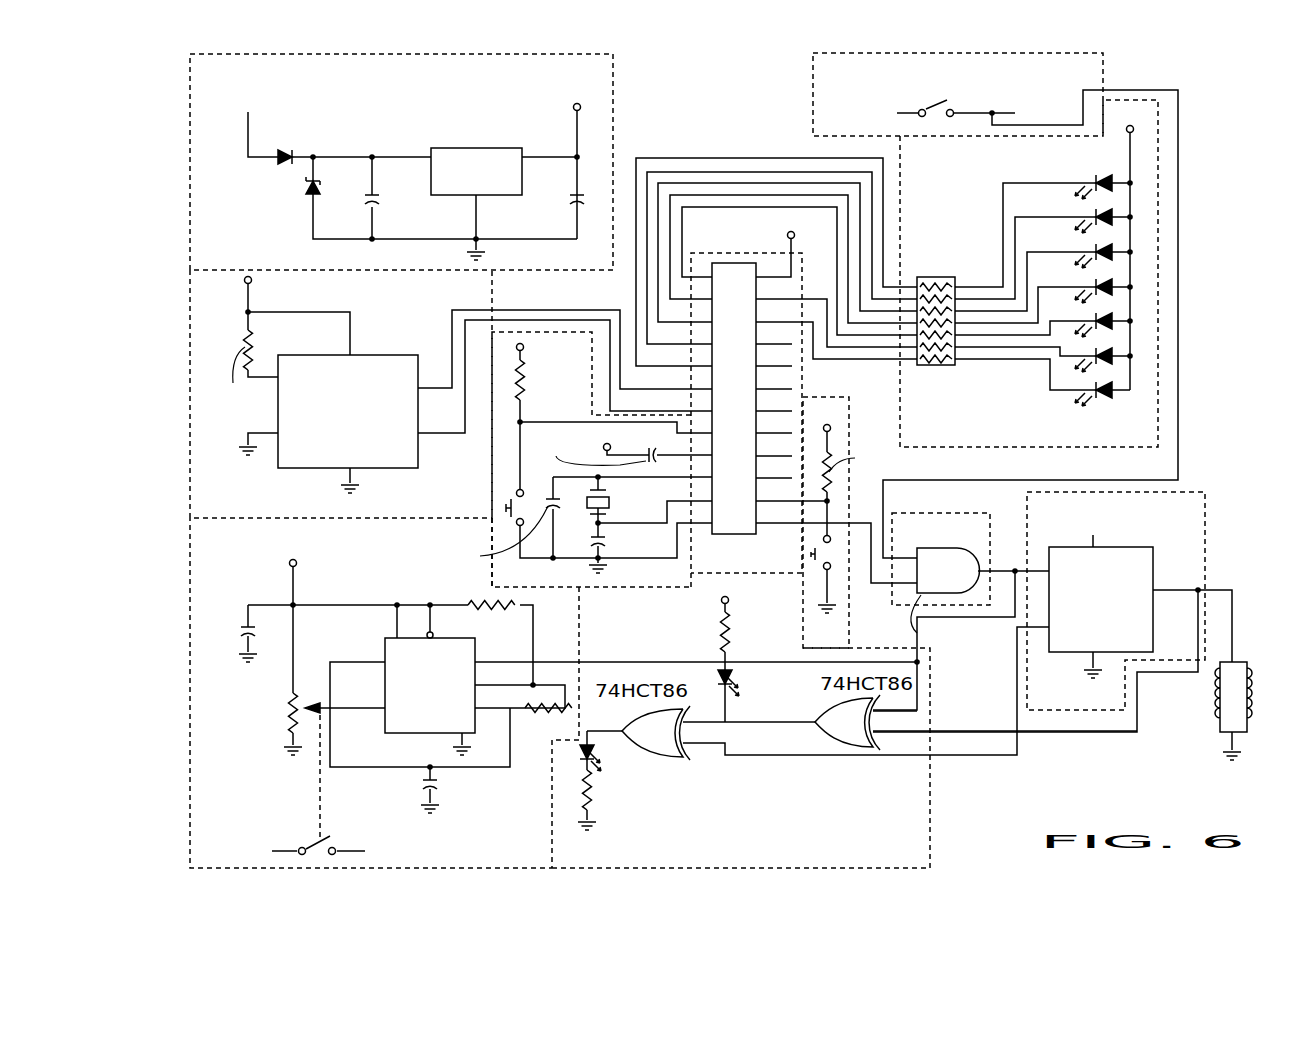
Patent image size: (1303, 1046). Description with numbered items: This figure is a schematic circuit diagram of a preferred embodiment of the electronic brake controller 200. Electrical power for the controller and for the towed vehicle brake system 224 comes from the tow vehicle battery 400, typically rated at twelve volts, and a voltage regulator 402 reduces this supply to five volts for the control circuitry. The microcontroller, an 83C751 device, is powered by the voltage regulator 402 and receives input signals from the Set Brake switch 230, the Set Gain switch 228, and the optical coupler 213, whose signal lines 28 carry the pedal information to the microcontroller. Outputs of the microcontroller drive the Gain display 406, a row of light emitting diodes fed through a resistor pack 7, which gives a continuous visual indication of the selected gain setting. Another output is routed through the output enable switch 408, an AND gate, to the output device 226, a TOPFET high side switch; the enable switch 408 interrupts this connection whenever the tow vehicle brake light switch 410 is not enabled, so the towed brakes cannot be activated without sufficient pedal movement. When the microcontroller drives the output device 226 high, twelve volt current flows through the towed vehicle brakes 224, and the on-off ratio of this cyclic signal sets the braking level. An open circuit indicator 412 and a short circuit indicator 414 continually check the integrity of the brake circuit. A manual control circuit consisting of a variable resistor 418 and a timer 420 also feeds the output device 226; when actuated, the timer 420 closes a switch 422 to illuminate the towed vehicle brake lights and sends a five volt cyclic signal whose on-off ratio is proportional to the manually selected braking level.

The brake controller 200 is at (727, 100).
The tow vehicle battery 400 is at (277, 111).
The voltage regulator 402 is at (401, 162).
The optical coupler 213 is at (458, 506).
The sensor signal lines 28 is at (565, 361).
The Set Brake switch 230 is at (578, 403).
The tow vehicle brake light switch 410 is at (861, 87).
The Gain display 406 is at (1070, 434).
The resistor pack 7 is at (966, 337).
The Set Gain switch 228 is at (848, 640).
The output enable switch 408 is at (958, 540).
The output device 226 is at (1198, 540).
The towed vehicle brake system 224 is at (1256, 711).
The timer 420 is at (441, 720).
The variable resistor 418 is at (268, 680).
The switch 422 is at (406, 852).
The short circuit indicator 414 is at (763, 653).
The open circuit indicator 412 is at (618, 784).